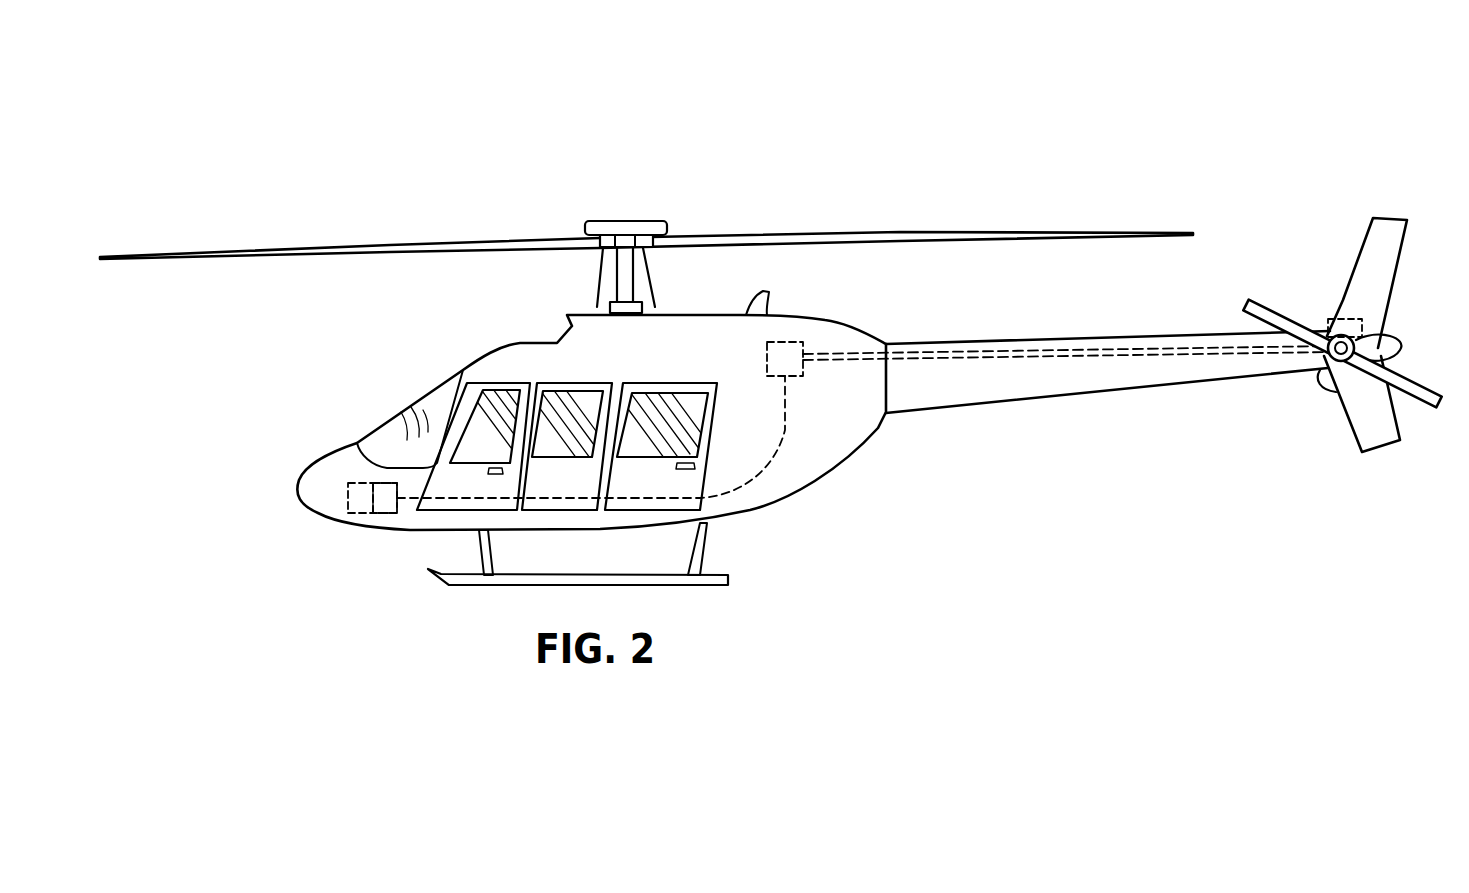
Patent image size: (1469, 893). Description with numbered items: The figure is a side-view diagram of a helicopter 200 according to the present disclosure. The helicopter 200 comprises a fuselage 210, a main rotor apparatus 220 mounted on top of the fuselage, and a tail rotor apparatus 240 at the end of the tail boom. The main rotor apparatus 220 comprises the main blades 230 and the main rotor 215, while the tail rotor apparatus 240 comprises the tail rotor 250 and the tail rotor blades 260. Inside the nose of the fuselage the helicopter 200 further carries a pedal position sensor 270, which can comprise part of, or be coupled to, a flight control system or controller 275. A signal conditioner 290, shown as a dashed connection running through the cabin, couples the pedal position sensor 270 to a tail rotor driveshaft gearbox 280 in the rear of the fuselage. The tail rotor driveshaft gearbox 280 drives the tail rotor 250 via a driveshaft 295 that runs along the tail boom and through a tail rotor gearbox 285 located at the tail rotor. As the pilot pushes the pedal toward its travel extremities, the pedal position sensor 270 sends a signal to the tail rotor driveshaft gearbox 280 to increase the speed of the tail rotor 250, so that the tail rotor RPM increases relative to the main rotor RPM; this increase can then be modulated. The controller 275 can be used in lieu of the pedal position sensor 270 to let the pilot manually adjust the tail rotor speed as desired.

The helicopter 200 is at (319, 95).
The fuselage 210 is at (293, 490).
The main rotor 215 is at (626, 219).
The main rotor apparatus 220 is at (560, 290).
The main blades 230 is at (387, 245).
The tail rotor apparatus 240 is at (1424, 274).
The tail rotor 250 is at (1343, 361).
The tail rotor blades 260 is at (1264, 305).
The pedal position sensor 270 is at (378, 514).
The flight control system or controller 275 is at (347, 500).
The tail rotor driveshaft gearbox 280 is at (767, 360).
The tail rotor gearbox 285 is at (1345, 319).
The signal conditioner 290 is at (787, 407).
The driveshaft 295 is at (1094, 346).